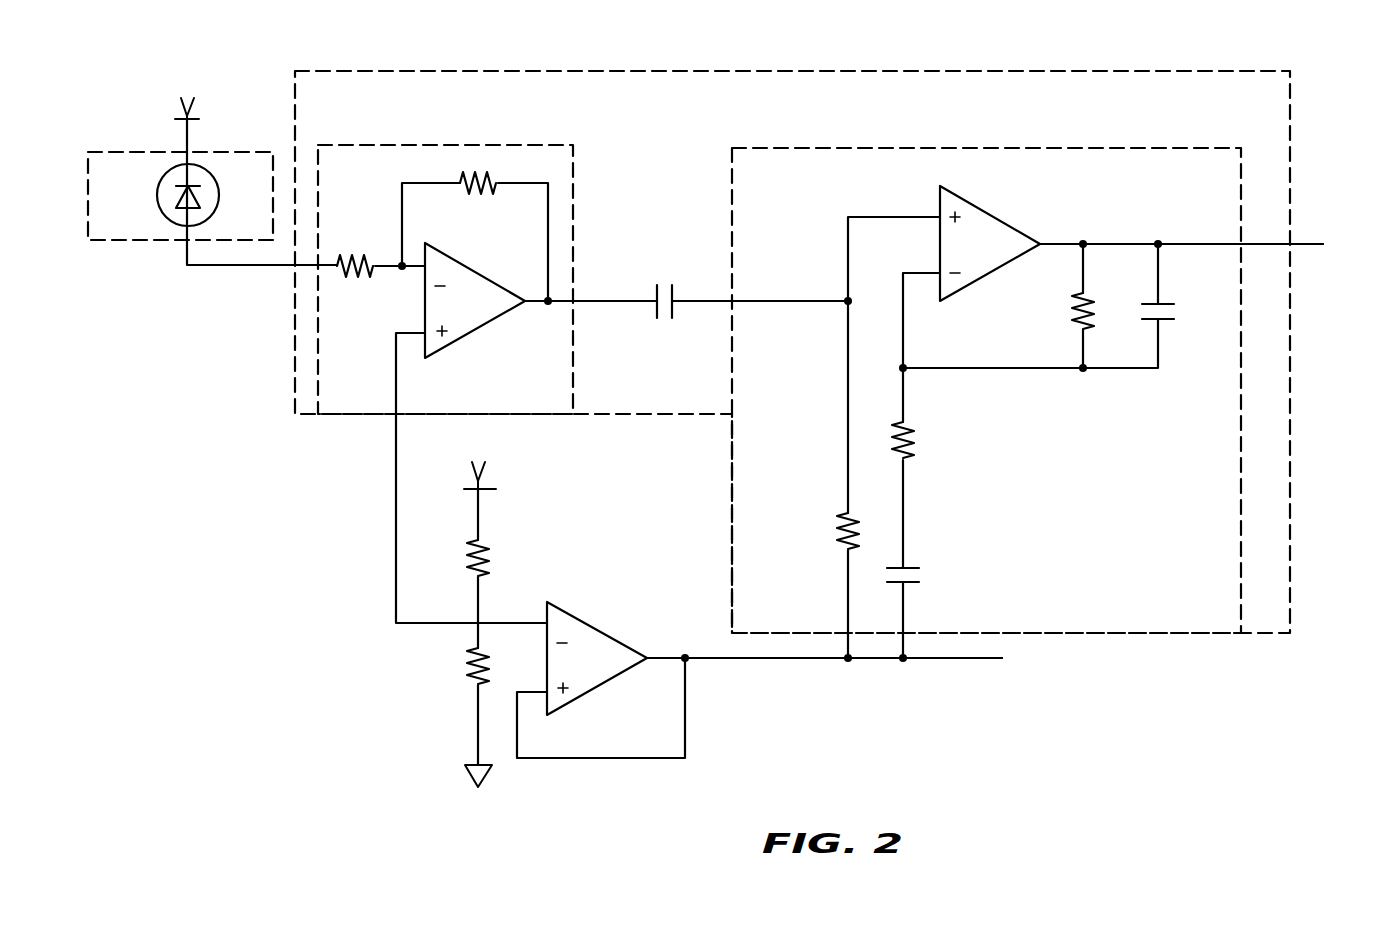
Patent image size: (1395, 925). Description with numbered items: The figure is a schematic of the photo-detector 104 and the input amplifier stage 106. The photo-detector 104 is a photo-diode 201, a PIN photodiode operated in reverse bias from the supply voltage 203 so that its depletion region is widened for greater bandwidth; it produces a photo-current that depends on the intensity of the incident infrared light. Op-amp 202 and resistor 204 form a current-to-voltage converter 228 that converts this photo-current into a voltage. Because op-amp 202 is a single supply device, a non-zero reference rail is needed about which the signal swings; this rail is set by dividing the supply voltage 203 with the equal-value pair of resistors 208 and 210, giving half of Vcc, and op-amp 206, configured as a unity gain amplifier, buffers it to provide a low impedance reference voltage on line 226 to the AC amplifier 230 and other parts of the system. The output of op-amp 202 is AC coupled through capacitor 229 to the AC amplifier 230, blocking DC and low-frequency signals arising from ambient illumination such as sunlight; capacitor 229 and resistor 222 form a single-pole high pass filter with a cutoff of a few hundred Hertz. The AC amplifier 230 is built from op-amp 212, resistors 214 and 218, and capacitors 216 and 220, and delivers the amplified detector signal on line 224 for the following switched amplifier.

The photo-detector 104 is at (137, 150).
The input amplifier stage 106 is at (1172, 76).
The photo-diode 201 is at (158, 186).
The op-amp 202 is at (473, 333).
The supply voltage 203 is at (196, 104).
The resistor 204 is at (470, 197).
The op-amp 206 is at (598, 690).
The resistor 208 is at (495, 565).
The resistor 210 is at (465, 660).
The op-amp 212 is at (978, 203).
The resistor 214 is at (1077, 312).
The capacitor 216 is at (1180, 310).
The resistor 218 is at (915, 447).
The capacitor 220 is at (918, 575).
The resistor 222 is at (840, 530).
The line 224 is at (1310, 243).
The input line 226 is at (963, 662).
The current-to-voltage converter 228 is at (447, 145).
The capacitor 229 is at (670, 283).
The AC amplifier 230 is at (1077, 146).